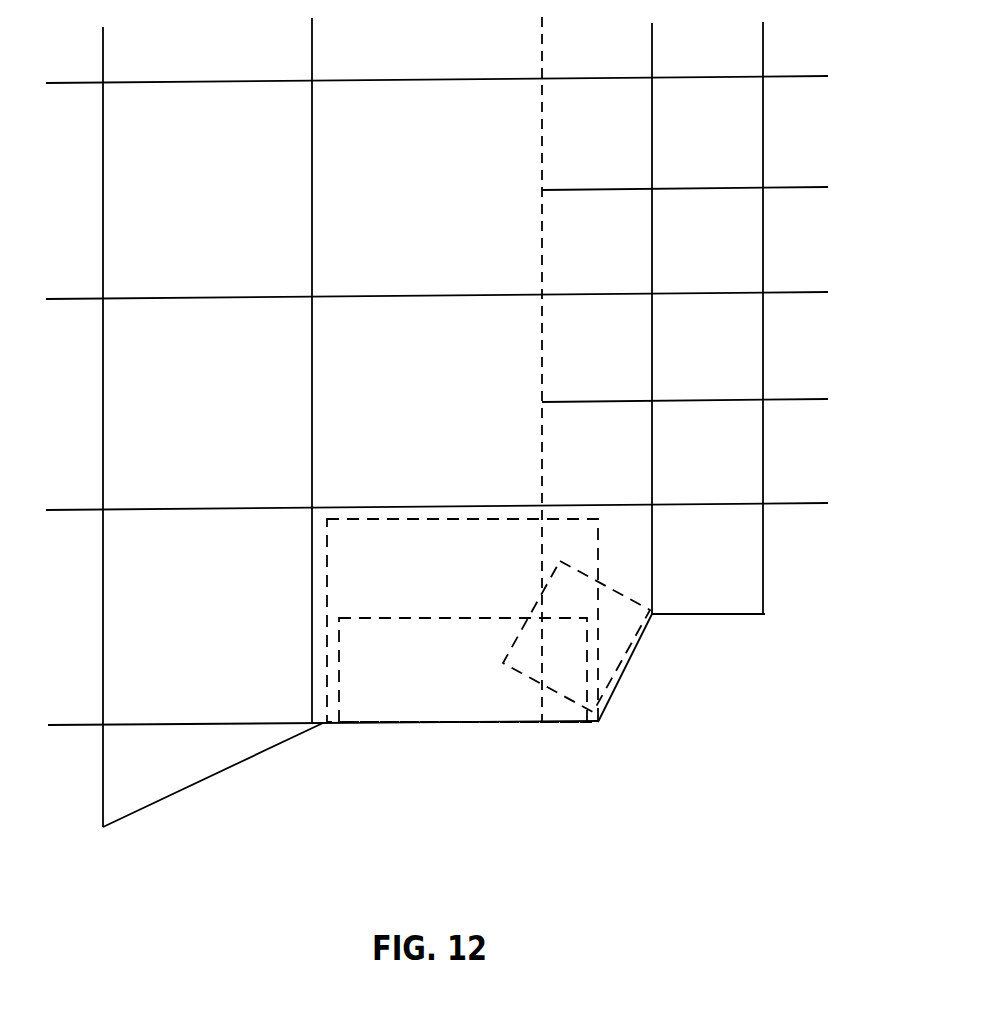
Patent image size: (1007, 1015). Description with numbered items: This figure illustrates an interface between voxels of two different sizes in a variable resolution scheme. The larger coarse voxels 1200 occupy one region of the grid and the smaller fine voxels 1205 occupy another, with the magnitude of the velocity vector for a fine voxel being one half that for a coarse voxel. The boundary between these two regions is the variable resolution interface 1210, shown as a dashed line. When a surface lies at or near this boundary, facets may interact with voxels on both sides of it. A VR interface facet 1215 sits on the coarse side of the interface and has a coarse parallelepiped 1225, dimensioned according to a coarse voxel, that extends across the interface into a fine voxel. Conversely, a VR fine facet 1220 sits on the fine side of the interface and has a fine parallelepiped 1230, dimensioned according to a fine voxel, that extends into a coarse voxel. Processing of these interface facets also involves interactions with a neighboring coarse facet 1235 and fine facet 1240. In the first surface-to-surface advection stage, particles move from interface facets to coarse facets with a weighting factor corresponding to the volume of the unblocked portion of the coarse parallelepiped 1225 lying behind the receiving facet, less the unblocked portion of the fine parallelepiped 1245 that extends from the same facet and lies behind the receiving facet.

The coarse voxels 1200 is at (190, 93).
The fine voxels 1205 is at (696, 90).
The variable resolution (VR) interface 1210 is at (538, 60).
The VR interface facet 1215 is at (427, 725).
The VR fine facet 1220 is at (610, 702).
The coarse parallelepiped 1225 is at (333, 578).
The fine parallelepiped 1230 is at (572, 707).
The coarse facet 1235 is at (222, 775).
The fine facet 1240 is at (732, 618).
The fine parallelepiped 1245 is at (430, 620).